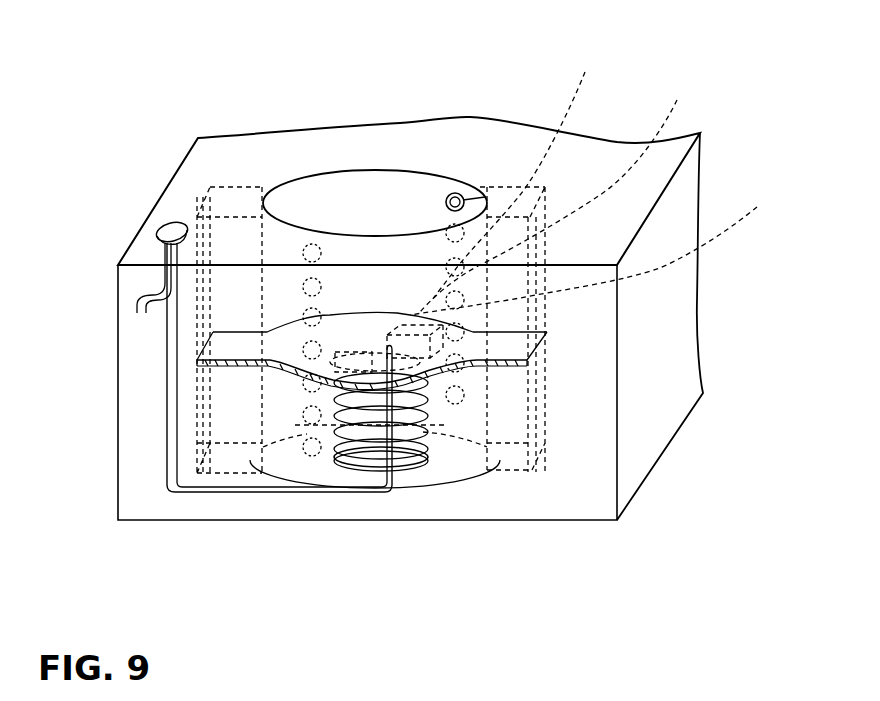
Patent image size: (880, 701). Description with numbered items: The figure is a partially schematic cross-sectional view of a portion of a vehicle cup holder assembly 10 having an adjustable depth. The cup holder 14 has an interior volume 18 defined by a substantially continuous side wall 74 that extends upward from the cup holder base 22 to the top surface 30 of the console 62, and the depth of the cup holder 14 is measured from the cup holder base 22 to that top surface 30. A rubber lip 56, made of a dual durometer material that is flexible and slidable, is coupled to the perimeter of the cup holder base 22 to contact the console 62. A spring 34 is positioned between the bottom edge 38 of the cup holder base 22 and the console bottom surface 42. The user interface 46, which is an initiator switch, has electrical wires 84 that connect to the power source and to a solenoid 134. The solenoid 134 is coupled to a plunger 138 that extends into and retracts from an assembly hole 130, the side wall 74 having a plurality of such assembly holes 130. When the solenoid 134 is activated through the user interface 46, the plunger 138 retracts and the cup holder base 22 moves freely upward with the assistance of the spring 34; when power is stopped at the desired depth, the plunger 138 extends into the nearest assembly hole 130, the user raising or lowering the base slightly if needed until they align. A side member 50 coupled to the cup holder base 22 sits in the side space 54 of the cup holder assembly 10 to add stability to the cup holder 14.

The cup holder assembly 10 is at (253, 138).
The cup holder 14 is at (294, 172).
The interior volume 18 is at (385, 207).
The cup holder base 22 is at (297, 333).
The top surface 30 is at (443, 176).
The spring 34 is at (445, 410).
The bottom edge 38 is at (300, 377).
The console bottom surface 42 is at (300, 460).
The user interface 46 is at (163, 230).
The side member 50 is at (505, 340).
The side space 54 is at (503, 407).
The rubber lip 56 is at (425, 442).
The console 62 is at (488, 147).
The side wall 74 is at (298, 200).
The electrical wires 84 is at (278, 493).
The assembly hole 130 is at (487, 203).
The solenoid 134 is at (564, 196).
The plunger 138 is at (595, 245).